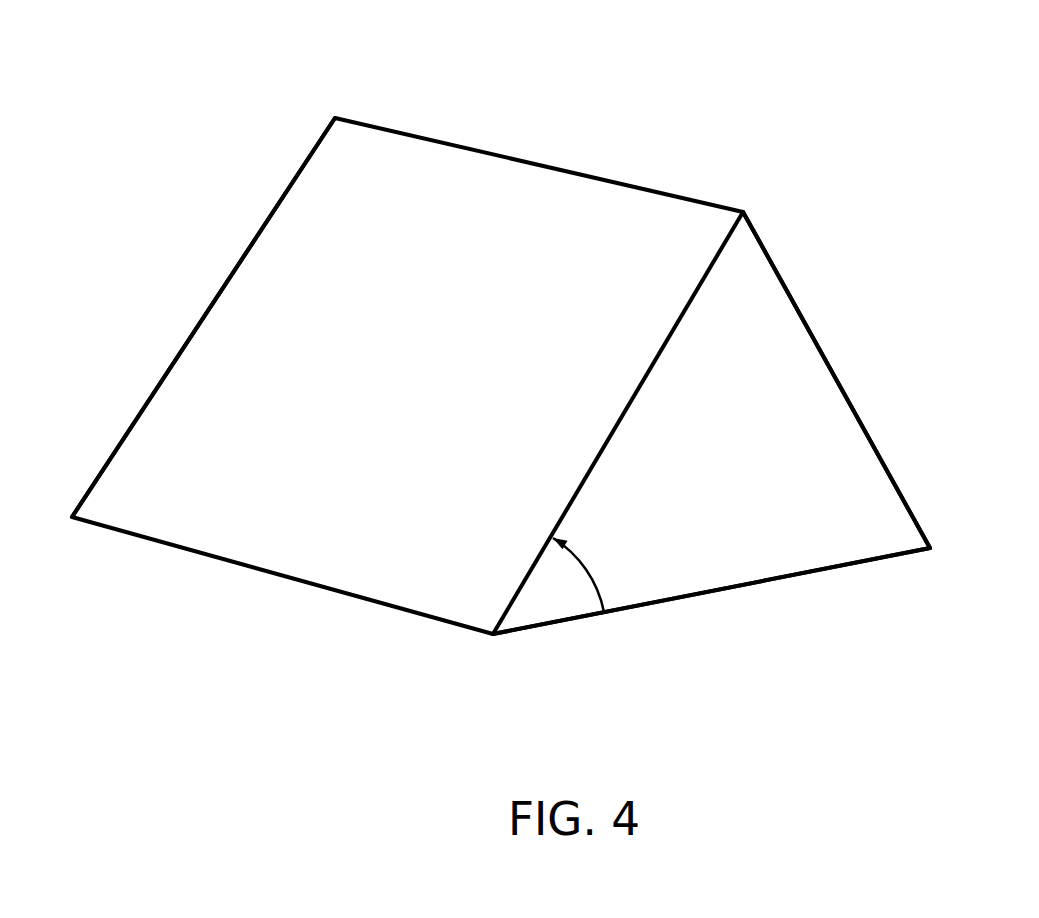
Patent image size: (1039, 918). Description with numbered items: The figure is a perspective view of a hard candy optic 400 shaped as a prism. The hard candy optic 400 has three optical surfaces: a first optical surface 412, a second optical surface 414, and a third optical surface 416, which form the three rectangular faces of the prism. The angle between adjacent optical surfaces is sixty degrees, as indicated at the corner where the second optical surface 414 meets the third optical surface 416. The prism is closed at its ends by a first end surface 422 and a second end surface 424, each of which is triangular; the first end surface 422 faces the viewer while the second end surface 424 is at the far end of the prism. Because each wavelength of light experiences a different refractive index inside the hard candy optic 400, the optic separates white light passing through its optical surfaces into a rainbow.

The hard candy optic 400 is at (540, 372).
The first optical surface 412 is at (830, 367).
The second optical surface 414 is at (707, 595).
The third optical surface 416 is at (592, 258).
The first end surface 422 is at (770, 448).
The second end surface 424 is at (210, 305).